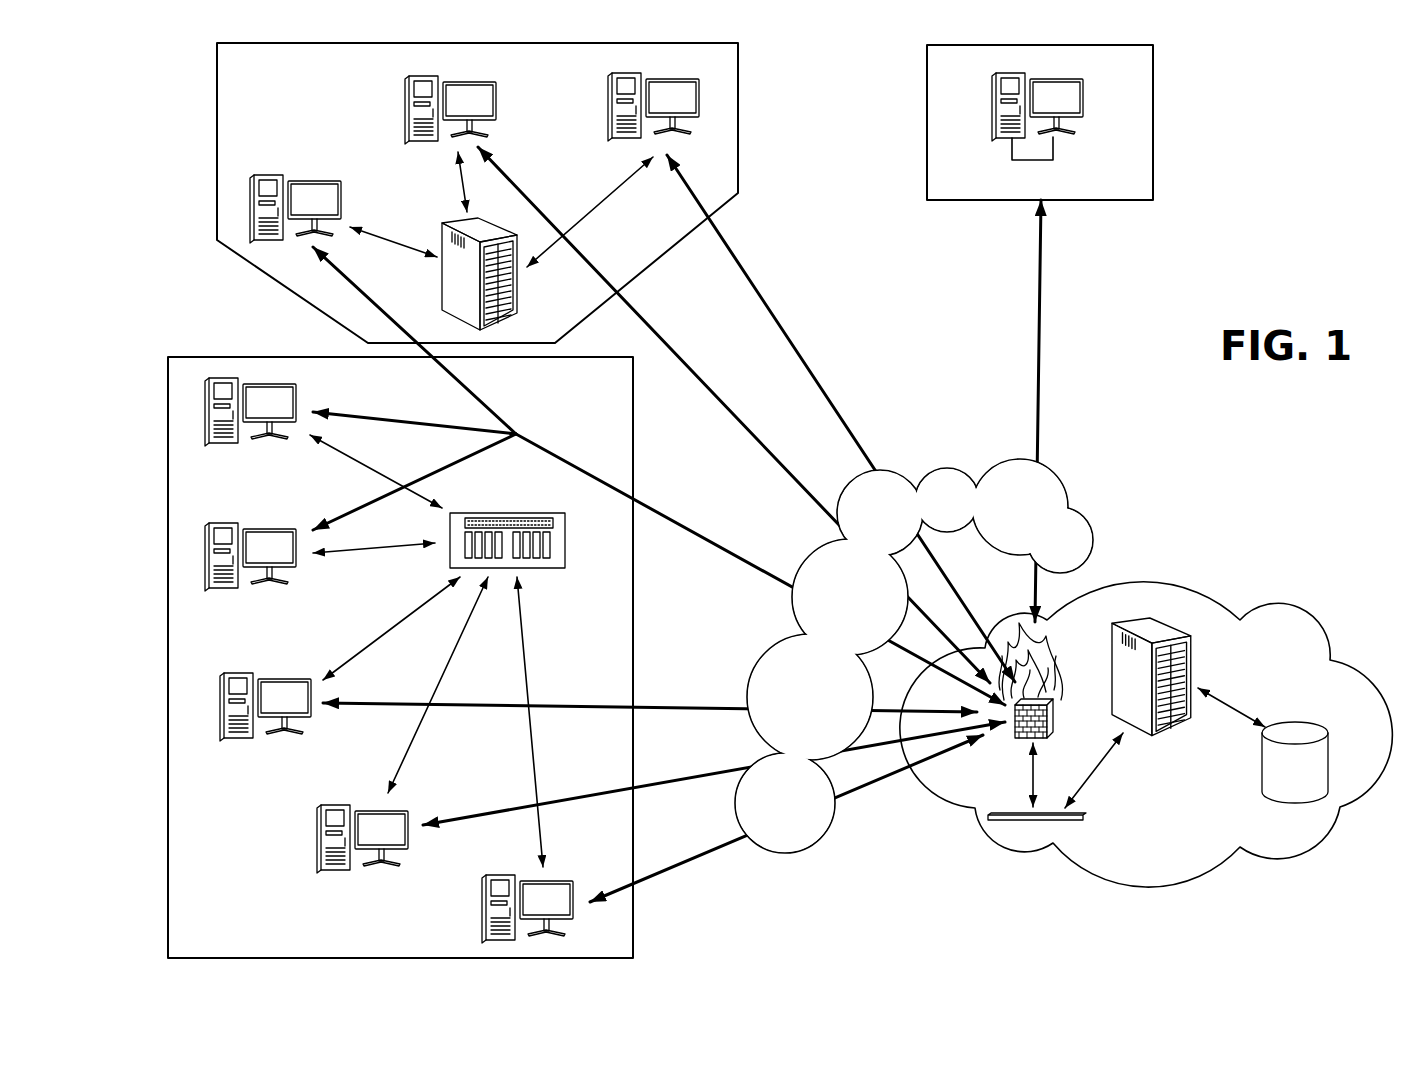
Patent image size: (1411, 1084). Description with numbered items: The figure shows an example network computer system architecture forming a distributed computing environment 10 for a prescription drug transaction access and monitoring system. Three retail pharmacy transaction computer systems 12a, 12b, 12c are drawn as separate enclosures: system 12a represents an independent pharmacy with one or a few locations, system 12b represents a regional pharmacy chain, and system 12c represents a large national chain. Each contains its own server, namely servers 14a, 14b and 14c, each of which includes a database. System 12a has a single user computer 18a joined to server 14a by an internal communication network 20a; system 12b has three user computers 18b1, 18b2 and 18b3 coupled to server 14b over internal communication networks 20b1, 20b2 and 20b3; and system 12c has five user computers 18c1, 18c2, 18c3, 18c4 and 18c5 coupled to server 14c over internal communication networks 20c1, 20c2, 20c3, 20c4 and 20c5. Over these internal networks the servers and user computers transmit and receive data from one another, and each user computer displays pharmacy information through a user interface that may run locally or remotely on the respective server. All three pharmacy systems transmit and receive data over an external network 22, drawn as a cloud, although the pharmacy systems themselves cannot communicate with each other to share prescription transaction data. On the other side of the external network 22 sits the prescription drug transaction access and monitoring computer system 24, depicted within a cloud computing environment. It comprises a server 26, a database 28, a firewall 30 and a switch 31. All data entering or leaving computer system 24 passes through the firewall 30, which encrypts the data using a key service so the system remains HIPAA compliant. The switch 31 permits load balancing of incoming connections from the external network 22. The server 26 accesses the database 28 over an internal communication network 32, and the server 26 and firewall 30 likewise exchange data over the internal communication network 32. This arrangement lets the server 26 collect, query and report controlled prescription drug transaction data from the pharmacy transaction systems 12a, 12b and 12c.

The distributed computing environment 10 is at (1296, 140).
The retail pharmacy transaction computer system 12a is at (1153, 120).
The retail pharmacy transaction computer system 12b is at (217, 140).
The retail pharmacy transaction computer system 12c is at (168, 430).
The server 14a is at (992, 103).
The server 14b is at (517, 306).
The server 14c is at (483, 513).
The user computer 18a is at (1083, 102).
The user computer 18b1 is at (268, 172).
The user computer 18b2 is at (405, 108).
The user computer 18b3 is at (608, 108).
The user computer 18c1 is at (218, 443).
The user computer 18c2 is at (218, 590).
The user computer 18c3 is at (232, 737).
The user computer 18c4 is at (333, 868).
The user computer 18c5 is at (482, 926).
The internal communication network 20a is at (1033, 162).
The internal communication network 20b1 is at (368, 230).
The internal communication network 20b2 is at (462, 186).
The internal communication network 20b3 is at (593, 210).
The internal communication network 20c1 is at (363, 460).
The internal communication network 20c2 is at (340, 552).
The internal communication network 20c3 is at (348, 662).
The internal communication network 20c4 is at (409, 747).
The internal communication network 20c5 is at (536, 777).
The external network 22 is at (943, 463).
The prescription drug transaction access and monitoring computer system 24 is at (1148, 582).
The server 26 is at (1192, 673).
The database 28 is at (1297, 722).
The firewall 30 is at (1053, 718).
The switch 31 is at (1076, 820).
The internal communication network 32 is at (1037, 775).